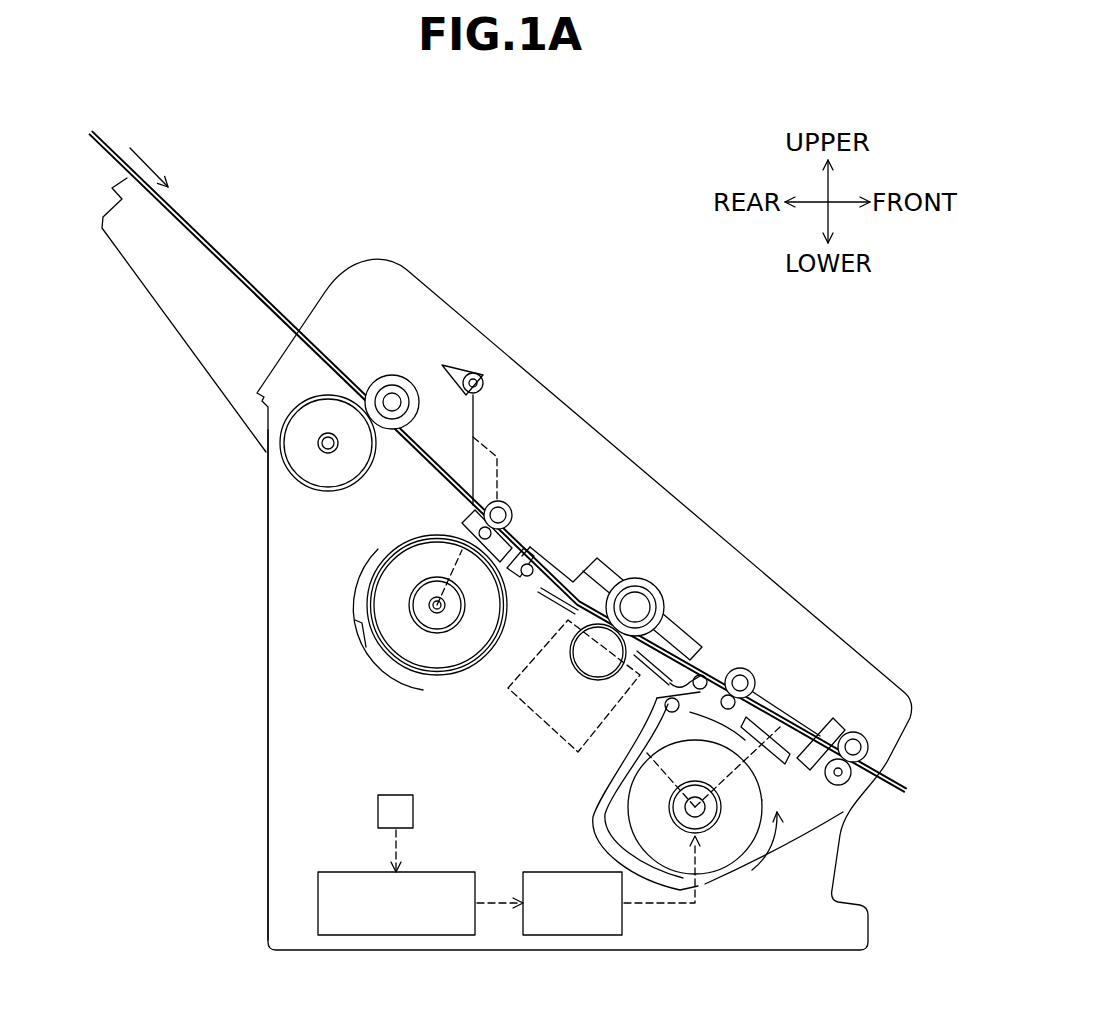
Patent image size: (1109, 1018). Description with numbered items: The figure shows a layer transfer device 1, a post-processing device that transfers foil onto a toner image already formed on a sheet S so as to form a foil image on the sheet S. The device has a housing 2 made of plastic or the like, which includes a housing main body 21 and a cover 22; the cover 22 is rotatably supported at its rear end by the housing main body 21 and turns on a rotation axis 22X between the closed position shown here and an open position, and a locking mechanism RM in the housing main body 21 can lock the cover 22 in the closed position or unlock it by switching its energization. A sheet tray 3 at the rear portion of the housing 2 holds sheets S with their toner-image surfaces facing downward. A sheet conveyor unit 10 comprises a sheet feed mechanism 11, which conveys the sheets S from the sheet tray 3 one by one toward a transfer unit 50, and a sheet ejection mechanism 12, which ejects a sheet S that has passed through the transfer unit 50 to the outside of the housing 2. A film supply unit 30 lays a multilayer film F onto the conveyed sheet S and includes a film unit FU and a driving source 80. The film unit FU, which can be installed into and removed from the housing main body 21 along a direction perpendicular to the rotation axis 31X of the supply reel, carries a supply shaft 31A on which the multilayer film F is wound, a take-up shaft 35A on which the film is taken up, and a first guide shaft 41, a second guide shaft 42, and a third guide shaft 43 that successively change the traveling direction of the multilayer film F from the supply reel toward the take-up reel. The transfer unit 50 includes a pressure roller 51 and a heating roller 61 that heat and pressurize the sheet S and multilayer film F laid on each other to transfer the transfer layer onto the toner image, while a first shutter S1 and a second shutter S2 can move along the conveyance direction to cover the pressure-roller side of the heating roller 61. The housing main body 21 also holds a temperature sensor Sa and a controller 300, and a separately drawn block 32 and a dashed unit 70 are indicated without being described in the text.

The layer transfer device 1 is at (658, 182).
The housing 2 is at (478, 330).
The sheet tray 3 is at (187, 343).
The sheet conveyor unit 10 is at (773, 333).
The sheet feed mechanism 11 is at (428, 423).
The sheet ejection mechanism 12 is at (806, 707).
The housing main body 21 is at (268, 735).
The cover 22 is at (851, 648).
The rotation axis 22X is at (478, 378).
The film supply unit 30 is at (343, 593).
The supply shaft 31A is at (417, 630).
The rotation axis 31X is at (437, 613).
The pressure roller 32 is at (370, 630).
The take-up shaft 35A is at (712, 852).
The first guide shaft 41 is at (527, 562).
The second guide shaft 42 is at (707, 670).
The third guide shaft 43 is at (843, 812).
The transfer unit 50 is at (720, 425).
The pressure roller 51 is at (660, 575).
The heating roller 61 is at (605, 575).
The exposure unit 70 is at (548, 745).
The driving source 80 is at (583, 937).
The controller 300 is at (408, 937).
The sheet S is at (203, 242).
The first shutter S1 is at (572, 575).
The second shutter S2 is at (655, 642).
The temperature sensor Sa is at (378, 810).
The multilayer film F is at (528, 600).
The film unit FU is at (368, 560).
The locking mechanism RM is at (843, 718).